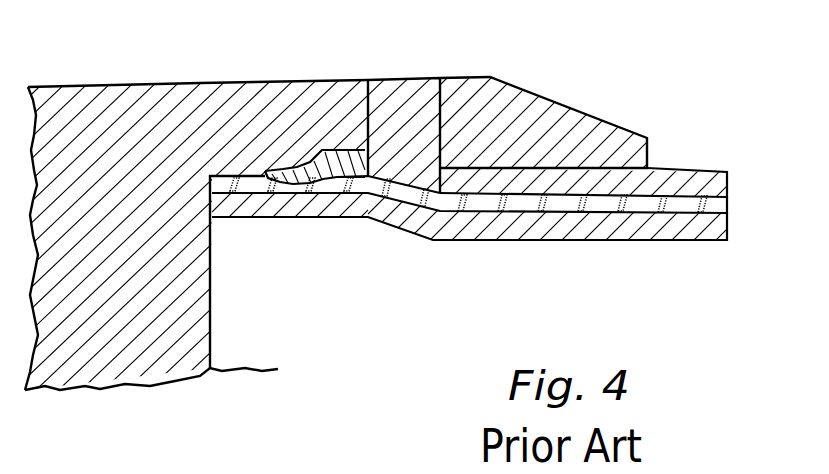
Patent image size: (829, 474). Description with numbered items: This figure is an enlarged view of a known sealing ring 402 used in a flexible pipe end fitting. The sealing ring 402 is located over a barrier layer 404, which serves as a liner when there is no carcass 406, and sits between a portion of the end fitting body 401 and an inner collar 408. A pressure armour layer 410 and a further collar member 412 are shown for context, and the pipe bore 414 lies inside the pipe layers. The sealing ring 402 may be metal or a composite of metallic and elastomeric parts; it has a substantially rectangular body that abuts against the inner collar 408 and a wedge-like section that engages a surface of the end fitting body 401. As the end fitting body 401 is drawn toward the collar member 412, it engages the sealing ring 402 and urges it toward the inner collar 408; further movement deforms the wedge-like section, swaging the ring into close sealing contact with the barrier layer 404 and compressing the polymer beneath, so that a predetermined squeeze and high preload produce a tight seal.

The end fitting body 401 is at (100, 133).
The sealing ring 402 is at (338, 160).
The barrier layer 404 is at (715, 205).
The carcass 406 is at (715, 228).
The inner collar 408 is at (395, 107).
The pressure armour layer 410 is at (700, 183).
The further collar member 412 is at (525, 110).
The pipe bore 414 is at (430, 315).